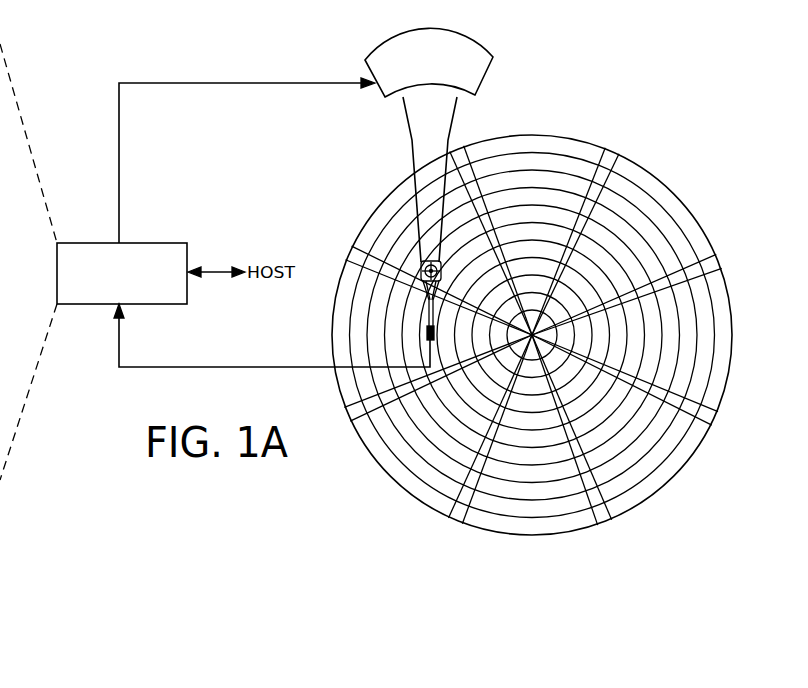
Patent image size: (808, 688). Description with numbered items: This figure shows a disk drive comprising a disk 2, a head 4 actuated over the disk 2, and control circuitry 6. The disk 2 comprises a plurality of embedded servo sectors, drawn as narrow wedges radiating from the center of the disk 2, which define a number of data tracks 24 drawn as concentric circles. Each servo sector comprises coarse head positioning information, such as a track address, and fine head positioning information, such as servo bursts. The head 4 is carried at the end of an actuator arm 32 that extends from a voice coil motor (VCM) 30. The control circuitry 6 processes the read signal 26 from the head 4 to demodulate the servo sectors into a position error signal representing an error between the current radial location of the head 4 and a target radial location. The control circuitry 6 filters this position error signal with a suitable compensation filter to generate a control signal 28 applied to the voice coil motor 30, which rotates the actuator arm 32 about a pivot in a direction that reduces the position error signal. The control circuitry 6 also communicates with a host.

The disk 2 is at (538, 332).
The head 4 is at (420, 341).
The control circuitry 6 is at (156, 243).
The data tracks 24 is at (531, 164).
The read signal 26 is at (242, 366).
The control signal 28 is at (118, 151).
The voice coil motor 30 is at (383, 96).
The actuator arm 32 is at (410, 152).